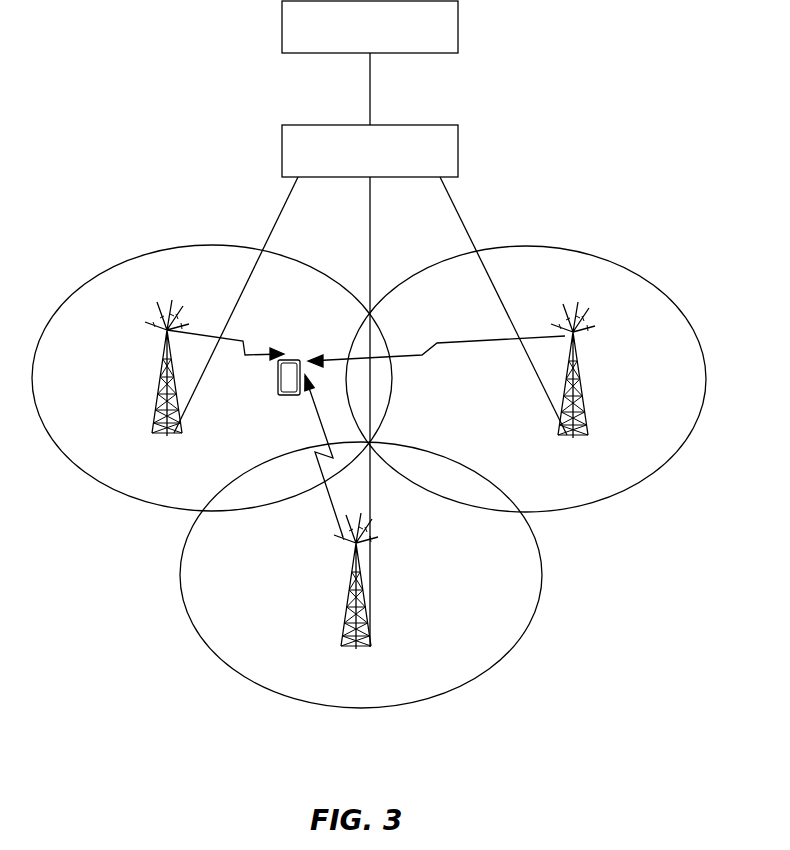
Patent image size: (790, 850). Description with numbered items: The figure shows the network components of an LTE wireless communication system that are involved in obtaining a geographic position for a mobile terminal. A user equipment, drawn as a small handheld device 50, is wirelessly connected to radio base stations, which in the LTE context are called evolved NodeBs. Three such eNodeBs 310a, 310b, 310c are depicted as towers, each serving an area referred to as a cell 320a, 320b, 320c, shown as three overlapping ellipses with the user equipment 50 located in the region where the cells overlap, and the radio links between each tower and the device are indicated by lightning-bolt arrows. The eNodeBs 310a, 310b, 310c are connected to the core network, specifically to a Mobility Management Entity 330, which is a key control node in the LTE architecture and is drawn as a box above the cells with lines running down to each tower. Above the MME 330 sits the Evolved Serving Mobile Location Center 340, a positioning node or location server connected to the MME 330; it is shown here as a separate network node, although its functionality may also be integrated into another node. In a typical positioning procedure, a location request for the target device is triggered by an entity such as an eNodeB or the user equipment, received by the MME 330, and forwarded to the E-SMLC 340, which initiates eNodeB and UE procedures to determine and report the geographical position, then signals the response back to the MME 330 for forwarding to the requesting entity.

The Evolved Serving Mobile Location Center 340 is at (448, 39).
The Mobility Management Entity 330 is at (430, 162).
The cell 320a is at (117, 339).
The cell 320b is at (670, 356).
The cell 320c is at (393, 692).
The eNodeB 310a is at (158, 388).
The eNodeB 310b is at (580, 398).
The eNodeB 310c is at (346, 603).
The user equipment (UE) 50 is at (289, 395).